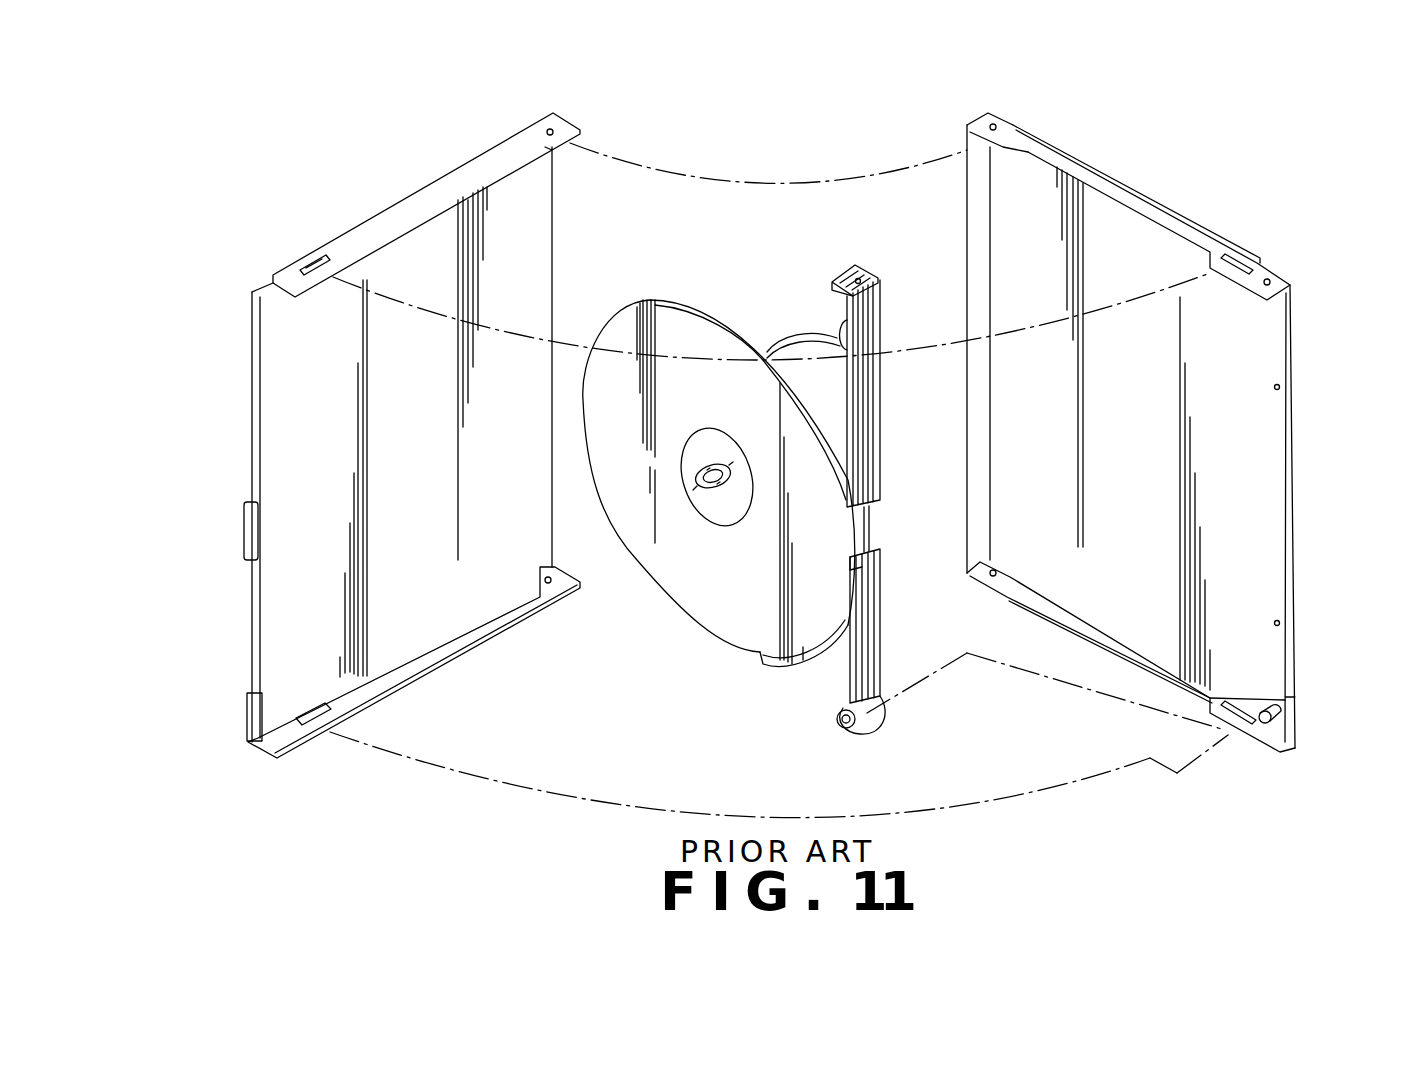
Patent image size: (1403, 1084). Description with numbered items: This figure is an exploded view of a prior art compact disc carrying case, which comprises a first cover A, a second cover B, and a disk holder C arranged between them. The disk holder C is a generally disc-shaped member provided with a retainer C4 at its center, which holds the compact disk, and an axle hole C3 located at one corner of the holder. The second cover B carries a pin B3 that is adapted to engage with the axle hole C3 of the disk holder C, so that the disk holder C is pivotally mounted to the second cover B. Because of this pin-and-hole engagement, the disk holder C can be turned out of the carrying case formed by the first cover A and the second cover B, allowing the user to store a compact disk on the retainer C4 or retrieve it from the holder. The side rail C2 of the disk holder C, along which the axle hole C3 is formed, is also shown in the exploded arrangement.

The first cover A is at (252, 422).
The second cover B is at (1298, 440).
The pin B3 is at (1270, 722).
The disk holder C is at (717, 613).
The cartridge side rail C2 is at (885, 483).
The axle hole C3 is at (841, 727).
The retainer C4 is at (703, 483).